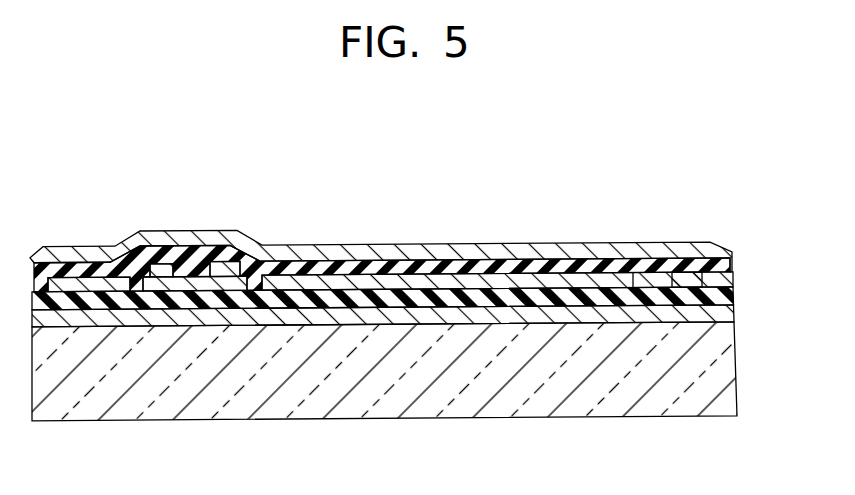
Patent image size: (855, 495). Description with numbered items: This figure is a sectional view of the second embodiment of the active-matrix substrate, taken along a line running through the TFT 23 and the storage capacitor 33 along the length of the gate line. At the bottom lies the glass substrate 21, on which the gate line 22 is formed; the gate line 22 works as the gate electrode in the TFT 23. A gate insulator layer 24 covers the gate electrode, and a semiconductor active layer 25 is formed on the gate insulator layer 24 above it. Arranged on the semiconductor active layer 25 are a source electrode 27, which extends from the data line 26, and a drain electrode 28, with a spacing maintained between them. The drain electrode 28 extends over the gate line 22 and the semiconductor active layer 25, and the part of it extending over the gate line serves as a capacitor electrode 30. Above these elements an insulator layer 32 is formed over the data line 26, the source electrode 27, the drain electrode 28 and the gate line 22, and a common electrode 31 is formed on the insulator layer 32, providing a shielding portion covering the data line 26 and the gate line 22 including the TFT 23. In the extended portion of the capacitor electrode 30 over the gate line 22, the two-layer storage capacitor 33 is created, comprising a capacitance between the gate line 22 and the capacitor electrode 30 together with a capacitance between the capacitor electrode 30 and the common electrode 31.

The glass substrate 21 is at (734, 370).
The gate line 22 is at (722, 313).
The TFT 23 is at (196, 211).
The gate insulator layer 24 is at (721, 294).
The semiconductor active layer 25 is at (198, 284).
The data line 26 is at (74, 284).
The source electrode 27 is at (157, 270).
The drain electrode 28 is at (226, 266).
The capacitor electrode 30 is at (497, 283).
The common electrode 31 is at (597, 246).
The insulator layer 32 is at (331, 269).
The storage capacitor 33 is at (407, 240).